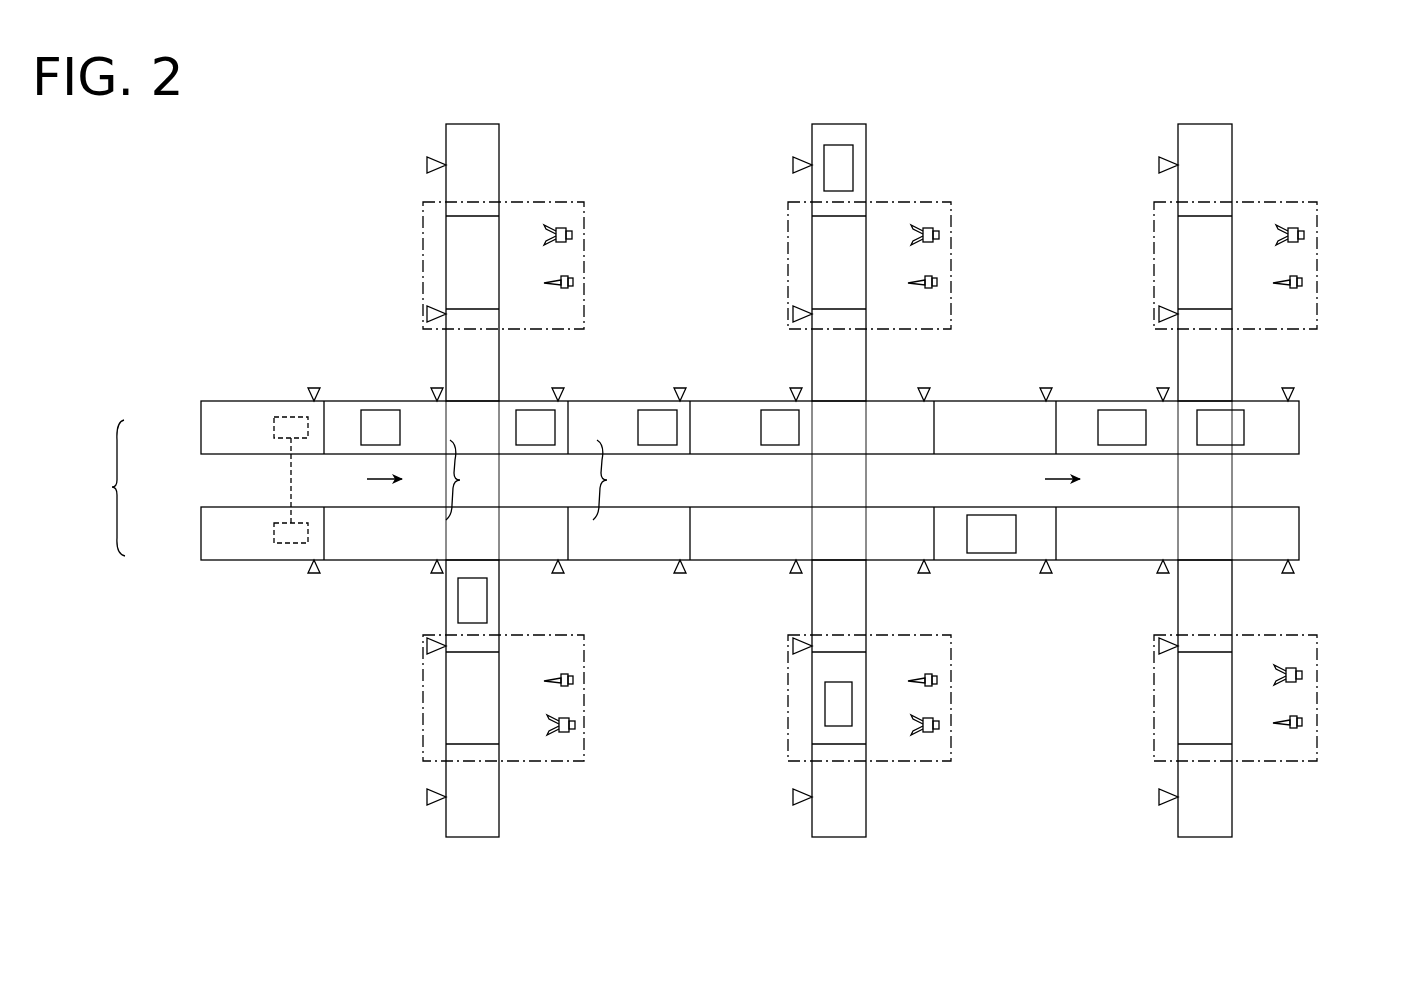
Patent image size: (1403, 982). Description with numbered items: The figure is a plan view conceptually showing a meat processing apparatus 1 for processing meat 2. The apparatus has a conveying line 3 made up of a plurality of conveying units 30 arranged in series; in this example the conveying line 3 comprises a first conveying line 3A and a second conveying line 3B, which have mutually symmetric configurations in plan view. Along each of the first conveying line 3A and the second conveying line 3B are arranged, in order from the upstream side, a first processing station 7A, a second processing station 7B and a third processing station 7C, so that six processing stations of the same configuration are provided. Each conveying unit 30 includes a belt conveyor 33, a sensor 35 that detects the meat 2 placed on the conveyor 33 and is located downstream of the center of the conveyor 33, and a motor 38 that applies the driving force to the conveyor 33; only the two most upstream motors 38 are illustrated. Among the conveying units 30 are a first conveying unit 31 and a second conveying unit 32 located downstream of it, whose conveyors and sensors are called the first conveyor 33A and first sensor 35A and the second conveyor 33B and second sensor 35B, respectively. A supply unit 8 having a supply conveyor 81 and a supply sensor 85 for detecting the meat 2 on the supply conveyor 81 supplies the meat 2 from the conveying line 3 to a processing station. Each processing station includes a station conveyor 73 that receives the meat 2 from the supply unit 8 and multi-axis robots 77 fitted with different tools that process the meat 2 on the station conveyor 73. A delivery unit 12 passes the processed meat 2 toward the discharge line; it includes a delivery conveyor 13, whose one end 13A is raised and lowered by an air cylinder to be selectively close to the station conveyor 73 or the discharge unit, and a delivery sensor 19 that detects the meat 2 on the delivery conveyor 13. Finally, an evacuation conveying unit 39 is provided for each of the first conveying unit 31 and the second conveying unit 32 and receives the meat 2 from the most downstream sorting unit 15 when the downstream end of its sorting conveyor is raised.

The meat processing apparatus 1 is at (1306, 95).
The meat 2 is at (376, 410).
The conveying line 3 is at (111, 488).
The first conveying line 3A is at (200, 530).
The second conveying line 3B is at (200, 423).
The first processing station 7A is at (570, 202).
The second processing station 7B is at (935, 202).
The third processing station 7C is at (1302, 202).
The supply unit 8 is at (446, 345).
The delivery unit 12 is at (478, 124).
The delivery conveyor 13 is at (490, 787).
The one end 13A is at (460, 745).
The sorting unit 15 is at (737, 398).
The delivery sensor 19 is at (427, 165).
The conveying unit 30 is at (276, 398).
The first conveying unit 31 is at (522, 398).
The second conveying unit 32 is at (608, 398).
The conveyor 33 is at (230, 410).
The first conveyor 33A is at (508, 480).
The second conveyor 33B is at (652, 480).
The sensor 35 is at (314, 388).
The first sensor 35A is at (560, 388).
The second sensor 35B is at (681, 388).
The motor 38 is at (291, 470).
The evacuation conveying unit 39 is at (1316, 403).
The station conveyor 73 is at (1188, 258).
The multi-axis robot 77 is at (1305, 283).
The supply conveyor 81 is at (488, 318).
The supply sensor 85 is at (1159, 314).